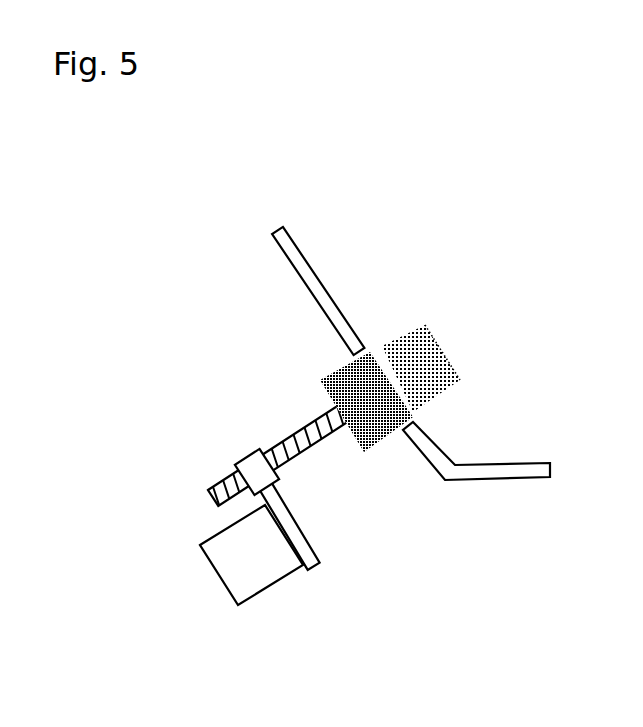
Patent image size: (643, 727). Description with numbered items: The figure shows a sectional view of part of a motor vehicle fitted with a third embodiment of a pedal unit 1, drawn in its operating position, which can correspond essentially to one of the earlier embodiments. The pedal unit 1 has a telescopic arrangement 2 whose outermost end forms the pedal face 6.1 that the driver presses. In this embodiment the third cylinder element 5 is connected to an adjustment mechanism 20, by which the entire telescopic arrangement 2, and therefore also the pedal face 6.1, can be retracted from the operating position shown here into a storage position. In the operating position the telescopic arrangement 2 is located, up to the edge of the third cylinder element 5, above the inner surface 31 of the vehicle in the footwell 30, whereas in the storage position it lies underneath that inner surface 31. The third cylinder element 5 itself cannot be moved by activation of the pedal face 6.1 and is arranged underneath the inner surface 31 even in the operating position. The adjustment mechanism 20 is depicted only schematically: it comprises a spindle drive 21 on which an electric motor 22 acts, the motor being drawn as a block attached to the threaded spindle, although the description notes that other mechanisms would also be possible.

The pedal unit 1 is at (364, 383).
The telescopic arrangement 2 is at (381, 302).
The third cylinder element 5 is at (381, 432).
The pedal face 6.1 is at (452, 336).
The adjustment mechanism 20 is at (332, 494).
The spindle drive 21 is at (252, 428).
The electric motor 22 is at (265, 569).
The footwell 30 is at (452, 237).
The inner surface 31 is at (502, 470).